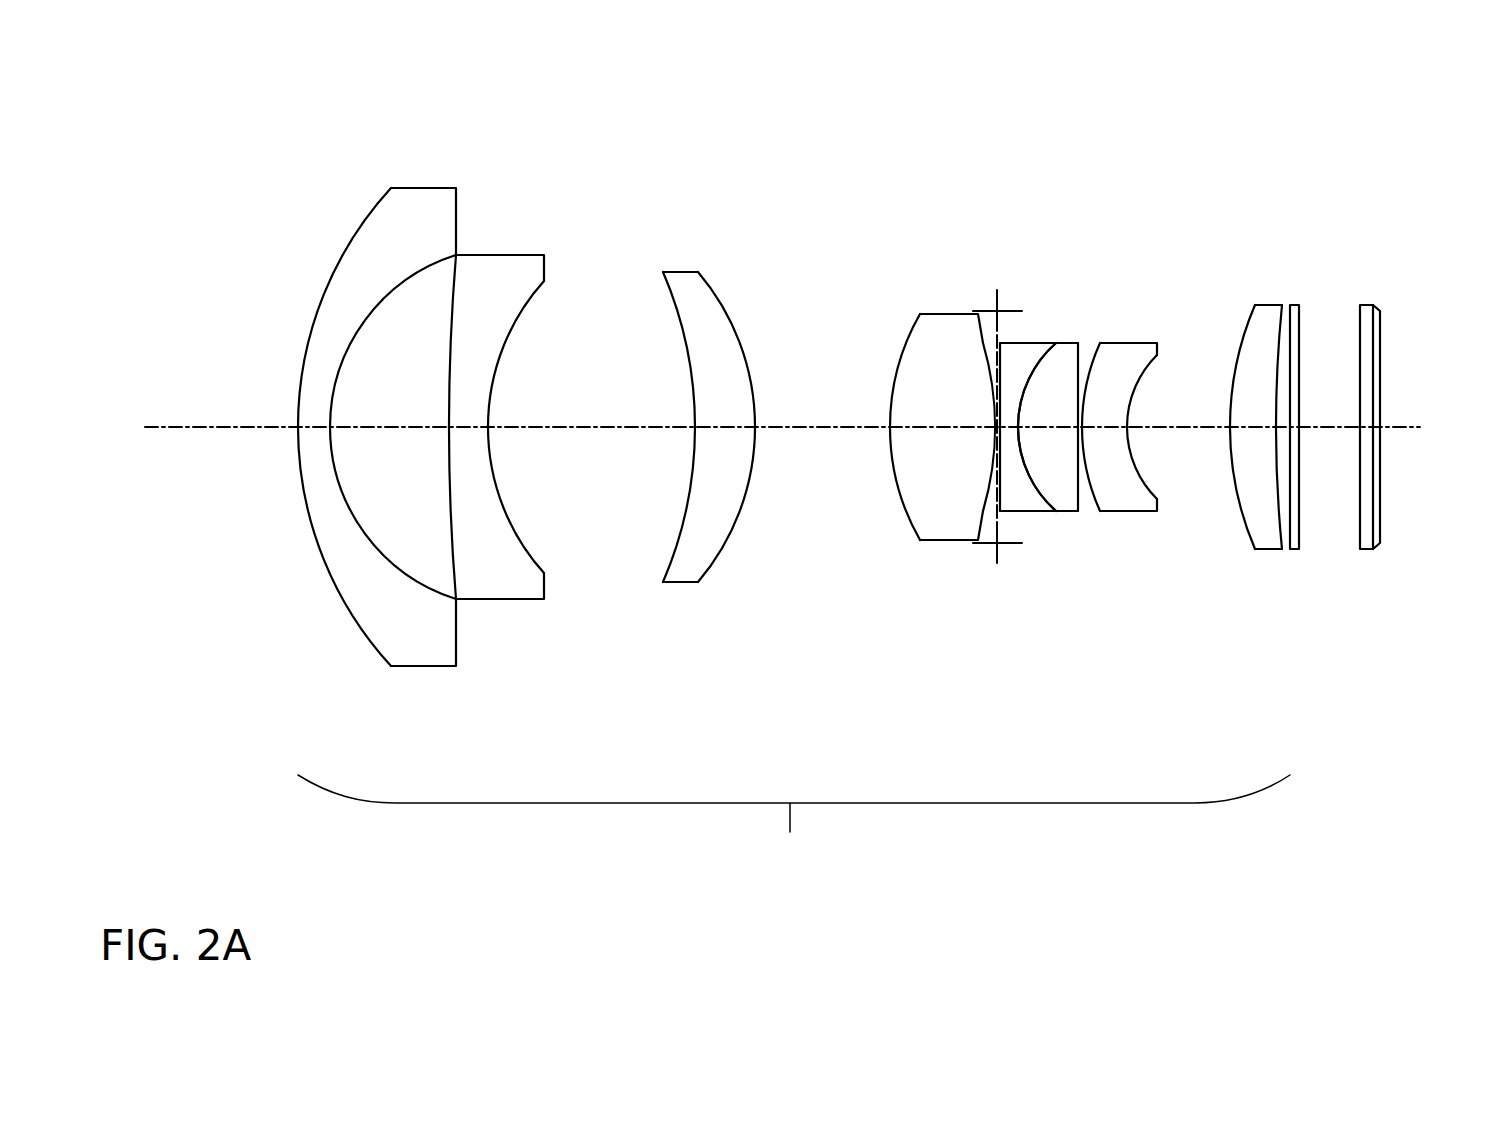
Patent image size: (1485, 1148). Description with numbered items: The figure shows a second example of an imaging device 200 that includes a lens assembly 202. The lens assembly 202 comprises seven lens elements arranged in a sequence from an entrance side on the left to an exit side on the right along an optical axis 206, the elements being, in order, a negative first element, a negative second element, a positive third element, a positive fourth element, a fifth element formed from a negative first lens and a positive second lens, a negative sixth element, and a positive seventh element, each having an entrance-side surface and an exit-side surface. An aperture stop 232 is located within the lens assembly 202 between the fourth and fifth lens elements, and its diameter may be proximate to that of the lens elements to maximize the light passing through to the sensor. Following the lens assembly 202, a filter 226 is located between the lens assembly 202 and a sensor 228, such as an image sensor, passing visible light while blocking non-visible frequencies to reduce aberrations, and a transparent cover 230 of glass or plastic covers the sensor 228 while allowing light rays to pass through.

The imaging device 200 is at (222, 96).
The lens assembly 202 is at (791, 477).
The optical axis 206 is at (160, 428).
The filter 226 is at (1296, 305).
The sensor 228 is at (1380, 333).
The cover 230 is at (1365, 550).
The aperture stop 232 is at (990, 493).